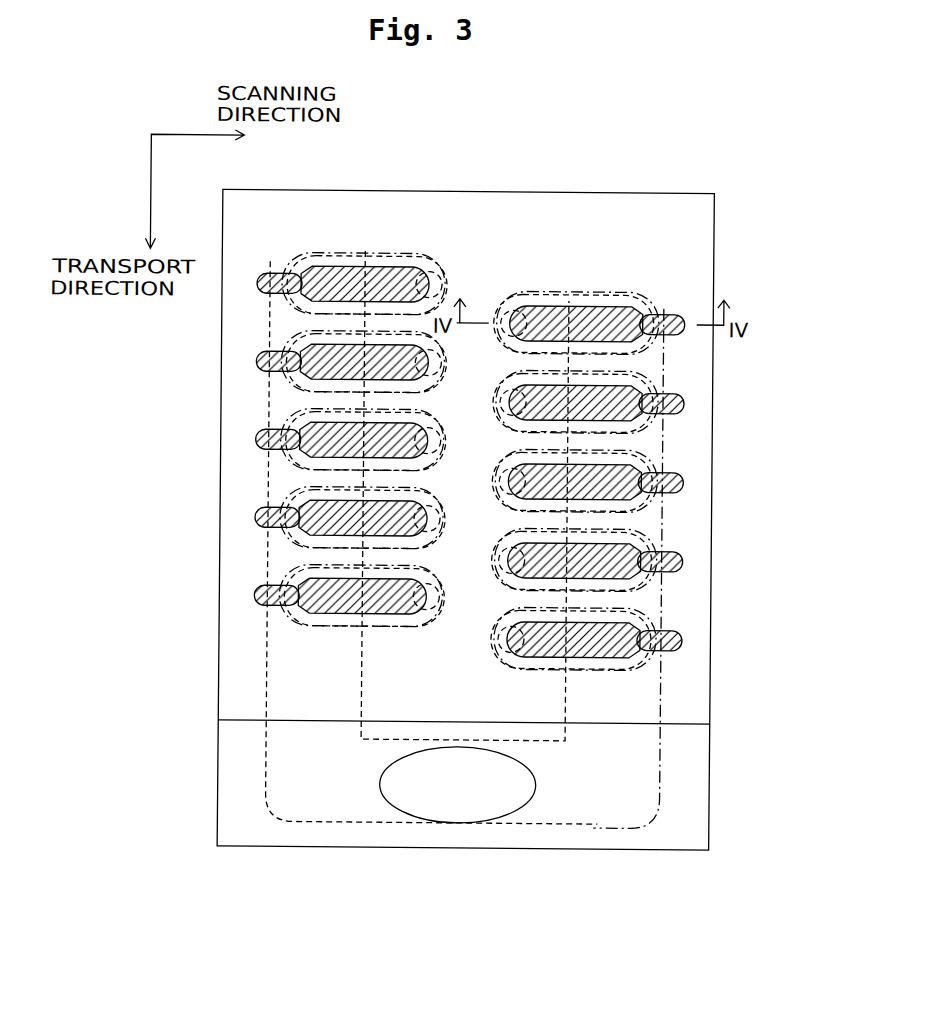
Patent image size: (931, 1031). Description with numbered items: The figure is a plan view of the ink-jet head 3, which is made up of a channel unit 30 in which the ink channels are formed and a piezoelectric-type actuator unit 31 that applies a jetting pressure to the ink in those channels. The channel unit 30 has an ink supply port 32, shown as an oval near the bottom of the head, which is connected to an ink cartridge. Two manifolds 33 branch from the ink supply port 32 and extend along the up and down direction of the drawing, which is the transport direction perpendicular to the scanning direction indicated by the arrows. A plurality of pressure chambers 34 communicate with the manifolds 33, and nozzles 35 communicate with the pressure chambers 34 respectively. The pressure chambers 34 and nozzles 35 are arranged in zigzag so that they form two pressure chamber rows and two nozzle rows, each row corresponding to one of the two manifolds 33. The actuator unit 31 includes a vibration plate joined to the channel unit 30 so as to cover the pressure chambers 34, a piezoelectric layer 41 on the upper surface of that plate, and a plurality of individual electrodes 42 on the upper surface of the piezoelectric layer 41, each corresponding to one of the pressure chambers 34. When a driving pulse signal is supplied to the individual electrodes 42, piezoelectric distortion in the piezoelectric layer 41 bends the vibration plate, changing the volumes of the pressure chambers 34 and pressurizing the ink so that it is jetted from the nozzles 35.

The ink-jet head 3 is at (719, 135).
The channel unit 30 is at (510, 520).
The actuator unit 31 is at (714, 238).
The ink supply port 32 is at (457, 820).
The manifolds 33 is at (477, 544).
The pressure chambers 34 is at (470, 407).
The nozzles 35 is at (465, 440).
The piezoelectric layer 41 is at (496, 742).
The individual electrodes 42 is at (467, 461).